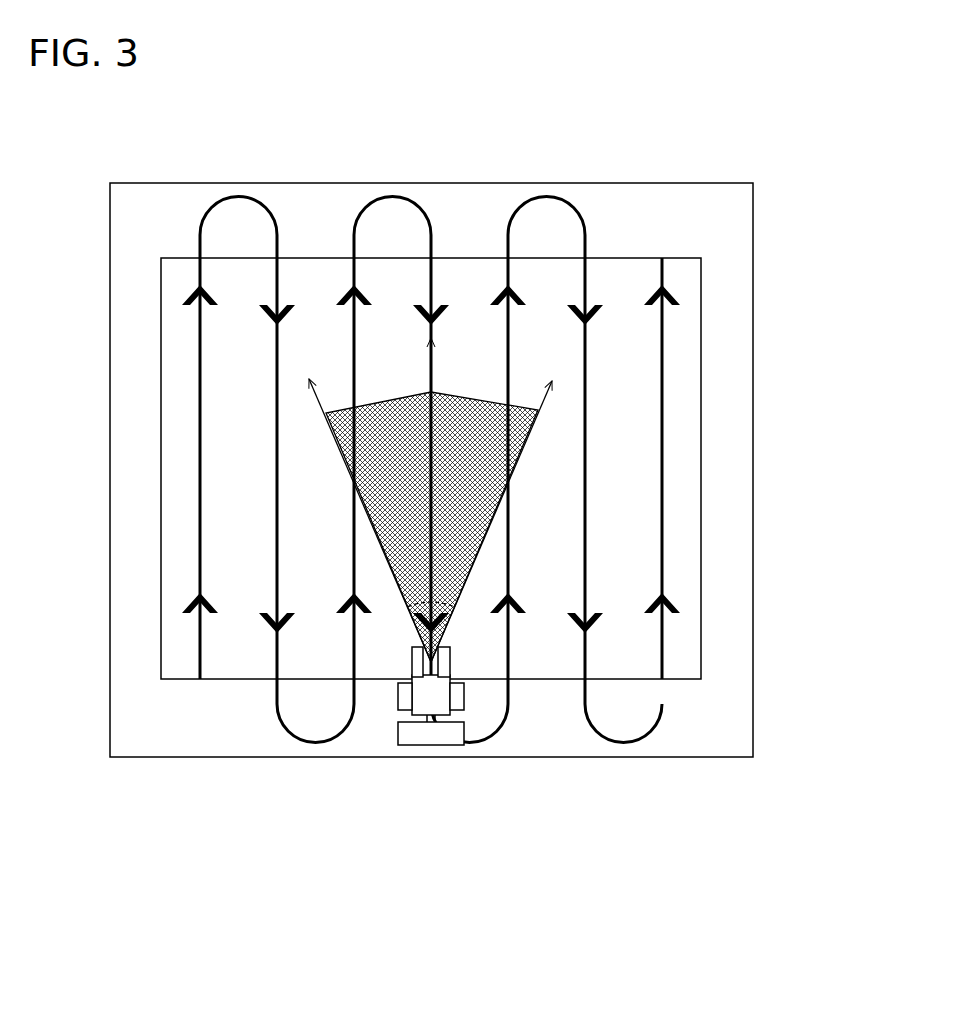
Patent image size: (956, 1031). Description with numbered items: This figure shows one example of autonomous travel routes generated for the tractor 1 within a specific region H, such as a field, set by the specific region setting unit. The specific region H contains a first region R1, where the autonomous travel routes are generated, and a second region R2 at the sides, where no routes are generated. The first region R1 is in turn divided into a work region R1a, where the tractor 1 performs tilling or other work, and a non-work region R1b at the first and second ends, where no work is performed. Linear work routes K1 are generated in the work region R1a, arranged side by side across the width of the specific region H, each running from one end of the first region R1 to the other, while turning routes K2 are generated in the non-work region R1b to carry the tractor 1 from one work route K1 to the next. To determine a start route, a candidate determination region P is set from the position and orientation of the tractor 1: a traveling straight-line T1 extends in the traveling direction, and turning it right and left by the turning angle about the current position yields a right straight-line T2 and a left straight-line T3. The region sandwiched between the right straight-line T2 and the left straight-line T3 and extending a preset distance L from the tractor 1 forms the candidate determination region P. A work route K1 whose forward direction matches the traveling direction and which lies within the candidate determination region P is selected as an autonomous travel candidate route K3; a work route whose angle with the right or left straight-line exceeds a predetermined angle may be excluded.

The specific region H is at (753, 275).
The first region R1 is at (502, 493).
The work region R1a is at (683, 390).
The non-work region R1b is at (461, 204).
The second region R2 is at (139, 528).
The work route K1 is at (431, 469).
The turning route K2 is at (268, 210).
The autonomous travel candidate route K3 is at (357, 341).
The candidate determination region P is at (481, 518).
The traveling straight-line T1 is at (433, 487).
The right straight-line T2 is at (486, 548).
The left straight-line T3 is at (374, 536).
The preset distance L is at (432, 539).
The tractor 1 is at (415, 738).